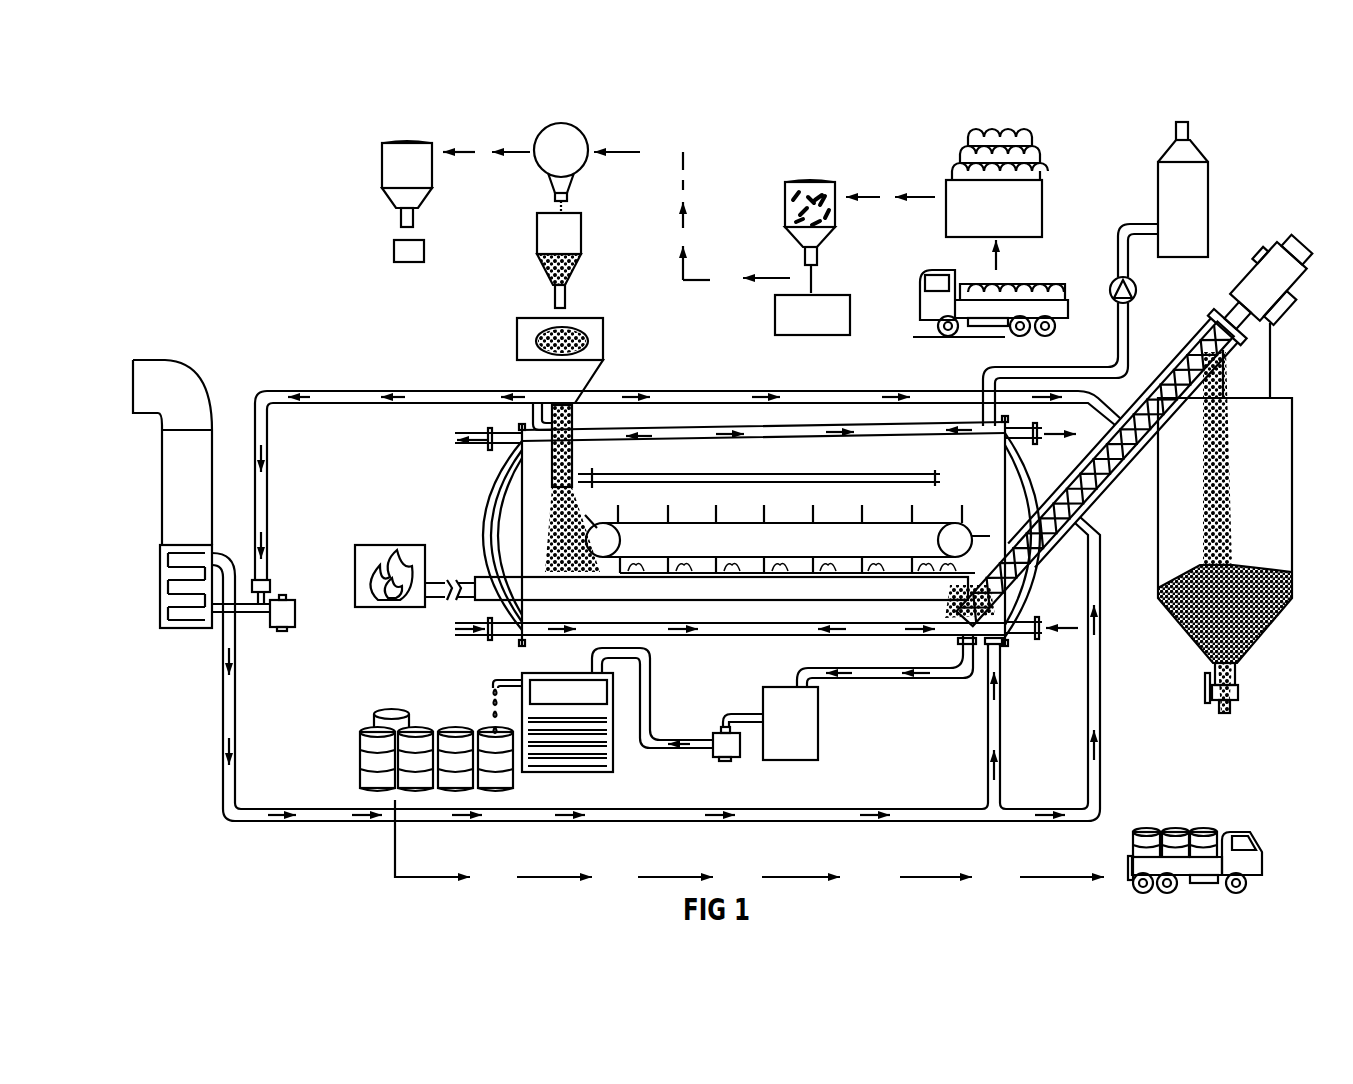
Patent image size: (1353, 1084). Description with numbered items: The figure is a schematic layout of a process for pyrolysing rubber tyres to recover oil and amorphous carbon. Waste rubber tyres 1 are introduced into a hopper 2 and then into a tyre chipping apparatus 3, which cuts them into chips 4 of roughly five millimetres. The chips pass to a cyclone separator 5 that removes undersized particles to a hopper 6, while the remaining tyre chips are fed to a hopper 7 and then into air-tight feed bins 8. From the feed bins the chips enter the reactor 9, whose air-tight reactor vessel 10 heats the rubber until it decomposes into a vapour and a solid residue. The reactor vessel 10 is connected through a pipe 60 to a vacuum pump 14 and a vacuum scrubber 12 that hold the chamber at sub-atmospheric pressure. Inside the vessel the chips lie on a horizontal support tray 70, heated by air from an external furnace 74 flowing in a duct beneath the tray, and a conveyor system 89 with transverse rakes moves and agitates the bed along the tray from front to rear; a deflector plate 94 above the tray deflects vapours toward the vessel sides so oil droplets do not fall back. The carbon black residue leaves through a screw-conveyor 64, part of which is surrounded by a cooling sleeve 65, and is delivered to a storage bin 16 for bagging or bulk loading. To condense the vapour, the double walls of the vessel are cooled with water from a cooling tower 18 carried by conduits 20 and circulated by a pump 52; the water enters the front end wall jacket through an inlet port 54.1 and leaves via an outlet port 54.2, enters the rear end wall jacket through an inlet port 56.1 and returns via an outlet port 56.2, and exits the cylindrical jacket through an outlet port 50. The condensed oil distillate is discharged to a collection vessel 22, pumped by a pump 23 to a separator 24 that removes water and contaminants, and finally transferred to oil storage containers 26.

The waste rubber tyres 1 is at (1022, 146).
The hopper 2 is at (821, 187).
The tyre chipping apparatus 3 is at (775, 315).
The tyre chips 4 is at (545, 272).
The cyclone separator 5 is at (572, 140).
The hopper 6 is at (390, 162).
The hopper 7 is at (582, 228).
The feed bins 8 is at (597, 378).
The reactor 9 is at (480, 522).
The reactor vessel 10 is at (490, 495).
The vacuum scrubber 12 is at (1206, 174).
The vacuum pump 14 is at (1137, 290).
The storage bin 16 is at (1158, 540).
The cooling tower 18 is at (210, 513).
The conduits 20 is at (378, 390).
The collection vessel 22 is at (798, 728).
The pump 23 is at (728, 746).
The separator 24 is at (615, 752).
The oil storage containers 26 is at (355, 758).
The outlet port 50 is at (533, 418).
The pump 52 is at (296, 612).
The inlet port 54.1 is at (492, 638).
The outlet port 54.2 is at (472, 430).
The inlet port 56.1 is at (1040, 640).
The outlet port 56.2 is at (1045, 410).
The pipe 60 is at (1130, 322).
The screw-conveyor 64 is at (1160, 396).
The cooling sleeve 65 is at (1118, 478).
The support tray 70 is at (768, 600).
The furnace 74 is at (386, 545).
The conveyor system 89 is at (613, 510).
The deflector plate 94 is at (835, 474).